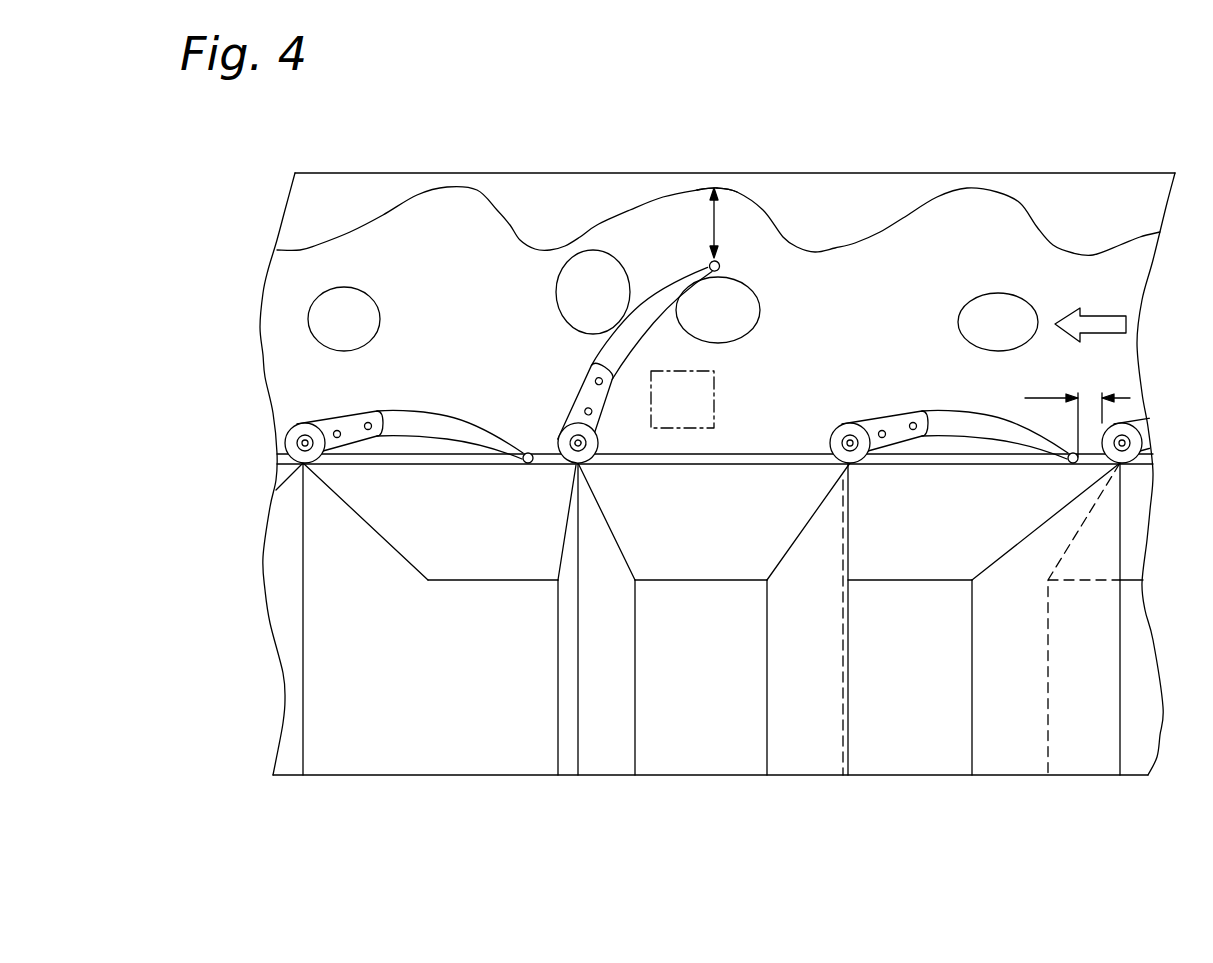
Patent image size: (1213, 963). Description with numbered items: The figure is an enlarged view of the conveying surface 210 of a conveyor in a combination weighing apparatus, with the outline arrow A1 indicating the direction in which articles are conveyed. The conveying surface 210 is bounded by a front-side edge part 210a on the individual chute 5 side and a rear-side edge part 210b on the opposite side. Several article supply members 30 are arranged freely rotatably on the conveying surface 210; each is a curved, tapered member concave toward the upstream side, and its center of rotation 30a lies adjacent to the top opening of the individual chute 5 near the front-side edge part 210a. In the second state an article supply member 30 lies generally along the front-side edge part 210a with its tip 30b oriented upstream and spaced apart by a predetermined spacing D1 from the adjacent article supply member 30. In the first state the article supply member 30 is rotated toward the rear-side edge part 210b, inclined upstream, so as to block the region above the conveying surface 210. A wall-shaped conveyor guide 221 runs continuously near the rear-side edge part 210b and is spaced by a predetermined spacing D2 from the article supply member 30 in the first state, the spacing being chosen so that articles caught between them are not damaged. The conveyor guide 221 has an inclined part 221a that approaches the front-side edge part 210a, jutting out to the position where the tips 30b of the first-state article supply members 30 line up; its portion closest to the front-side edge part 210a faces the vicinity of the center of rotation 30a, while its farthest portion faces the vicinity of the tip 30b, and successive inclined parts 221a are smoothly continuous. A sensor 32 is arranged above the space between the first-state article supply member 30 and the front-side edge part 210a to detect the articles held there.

The individual chute 5 is at (665, 758).
The article supply member 30 is at (683, 364).
The center of rotation 30a is at (572, 468).
The tip 30b is at (720, 262).
The sensor 32 is at (707, 408).
The conveying surface 210 is at (757, 455).
The front-side edge part 210a is at (645, 460).
The rear-side edge part 210b is at (590, 177).
The conveyor guide 221 is at (500, 197).
The inclined part 221a is at (654, 222).
The outline arrow A1 is at (1108, 327).
The predetermined spacing D1 is at (1077, 412).
The predetermined spacing D2 is at (737, 223).